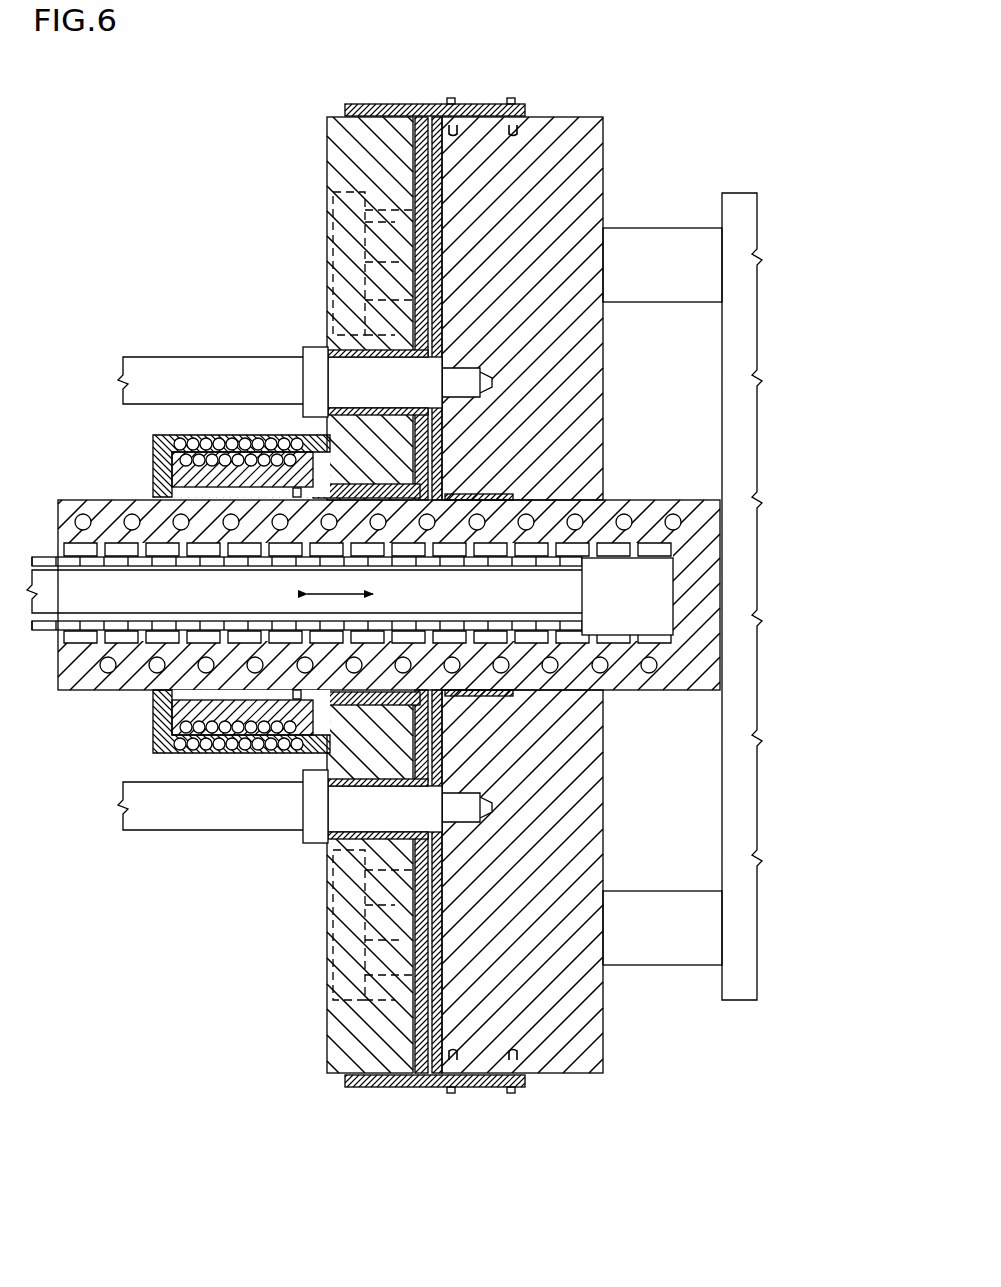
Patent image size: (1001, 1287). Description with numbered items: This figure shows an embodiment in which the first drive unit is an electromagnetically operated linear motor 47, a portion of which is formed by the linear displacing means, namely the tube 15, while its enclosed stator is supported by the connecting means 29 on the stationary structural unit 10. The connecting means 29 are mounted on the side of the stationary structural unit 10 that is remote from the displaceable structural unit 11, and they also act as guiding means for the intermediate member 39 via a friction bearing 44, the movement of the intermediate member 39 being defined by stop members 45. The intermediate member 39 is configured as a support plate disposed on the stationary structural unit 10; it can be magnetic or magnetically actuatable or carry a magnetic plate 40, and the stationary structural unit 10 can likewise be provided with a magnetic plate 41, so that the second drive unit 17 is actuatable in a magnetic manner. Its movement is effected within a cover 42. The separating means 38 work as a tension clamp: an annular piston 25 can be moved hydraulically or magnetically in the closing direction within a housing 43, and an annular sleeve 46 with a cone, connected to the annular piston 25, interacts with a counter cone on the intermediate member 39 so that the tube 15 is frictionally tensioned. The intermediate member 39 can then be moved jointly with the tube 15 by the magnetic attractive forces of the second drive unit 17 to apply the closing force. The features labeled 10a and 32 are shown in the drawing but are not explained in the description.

The stationary structural unit 10 is at (592, 138).
The housing end face 10a is at (510, 695).
The displaceable structural unit 11 is at (738, 210).
The tube 15 is at (145, 508).
The second drive unit 17 is at (330, 998).
The annular piston 25 is at (186, 470).
The connecting means 29 is at (133, 395).
The spacer 32 is at (650, 240).
The separating means 38 is at (205, 428).
The intermediate member 39 is at (338, 160).
The magnetic plate 40 is at (420, 145).
The magnetic plate 41 is at (437, 160).
The cover 42 is at (487, 106).
The housing 43 is at (160, 440).
The friction bearing 44 is at (365, 487).
The stop members 45 is at (318, 352).
The annular sleeve 46 is at (297, 368).
The linear motor 47 is at (50, 545).